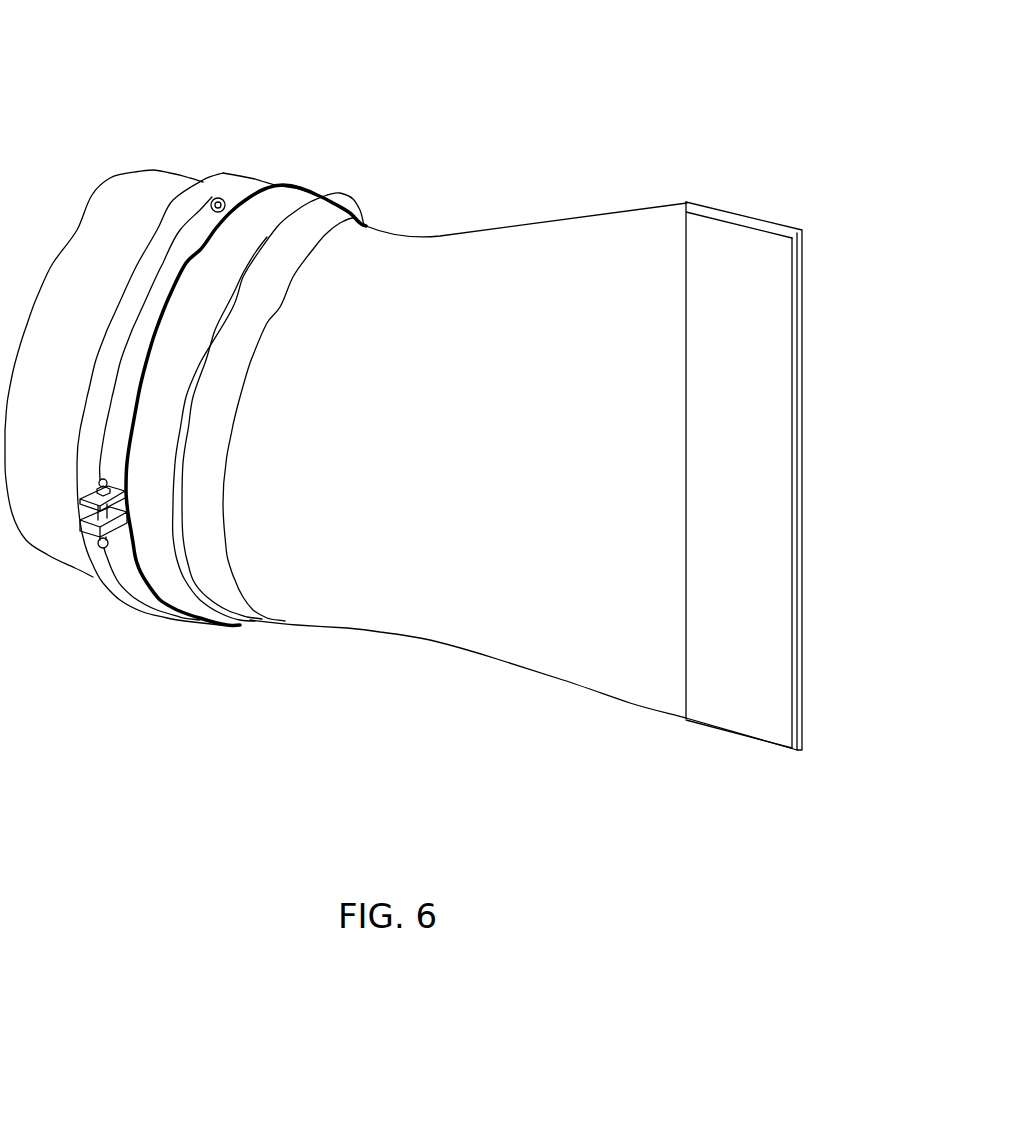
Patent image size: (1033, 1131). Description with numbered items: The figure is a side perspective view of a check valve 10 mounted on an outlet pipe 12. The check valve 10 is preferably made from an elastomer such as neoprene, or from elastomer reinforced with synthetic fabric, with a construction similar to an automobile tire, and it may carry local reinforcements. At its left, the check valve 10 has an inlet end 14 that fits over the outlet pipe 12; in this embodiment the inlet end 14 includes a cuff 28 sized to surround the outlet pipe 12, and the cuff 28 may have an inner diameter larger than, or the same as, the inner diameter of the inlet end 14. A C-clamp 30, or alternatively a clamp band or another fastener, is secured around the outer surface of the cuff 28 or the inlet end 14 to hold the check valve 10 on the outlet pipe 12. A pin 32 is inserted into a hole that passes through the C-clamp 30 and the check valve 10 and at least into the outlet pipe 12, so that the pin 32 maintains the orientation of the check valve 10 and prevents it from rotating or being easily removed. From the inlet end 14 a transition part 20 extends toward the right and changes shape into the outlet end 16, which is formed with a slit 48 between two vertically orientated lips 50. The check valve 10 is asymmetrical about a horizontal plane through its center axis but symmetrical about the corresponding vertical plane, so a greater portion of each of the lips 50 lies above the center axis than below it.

The check valve 10 is at (628, 99).
The outlet pipe 12 is at (113, 223).
The inlet end 14 is at (219, 197).
The outlet end 16 is at (803, 398).
The transition part 20 is at (442, 553).
The cuff 28 is at (293, 198).
The C-clamp 30 is at (262, 182).
The pin 32 is at (213, 195).
The slit 48 is at (802, 297).
The lips 50 is at (750, 253).